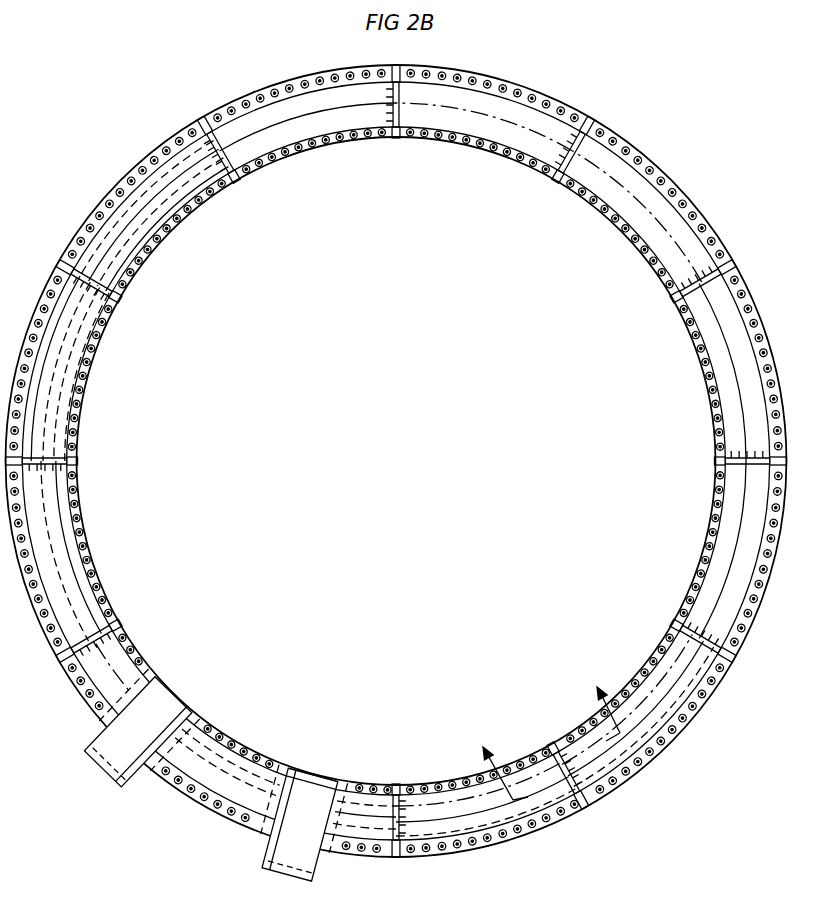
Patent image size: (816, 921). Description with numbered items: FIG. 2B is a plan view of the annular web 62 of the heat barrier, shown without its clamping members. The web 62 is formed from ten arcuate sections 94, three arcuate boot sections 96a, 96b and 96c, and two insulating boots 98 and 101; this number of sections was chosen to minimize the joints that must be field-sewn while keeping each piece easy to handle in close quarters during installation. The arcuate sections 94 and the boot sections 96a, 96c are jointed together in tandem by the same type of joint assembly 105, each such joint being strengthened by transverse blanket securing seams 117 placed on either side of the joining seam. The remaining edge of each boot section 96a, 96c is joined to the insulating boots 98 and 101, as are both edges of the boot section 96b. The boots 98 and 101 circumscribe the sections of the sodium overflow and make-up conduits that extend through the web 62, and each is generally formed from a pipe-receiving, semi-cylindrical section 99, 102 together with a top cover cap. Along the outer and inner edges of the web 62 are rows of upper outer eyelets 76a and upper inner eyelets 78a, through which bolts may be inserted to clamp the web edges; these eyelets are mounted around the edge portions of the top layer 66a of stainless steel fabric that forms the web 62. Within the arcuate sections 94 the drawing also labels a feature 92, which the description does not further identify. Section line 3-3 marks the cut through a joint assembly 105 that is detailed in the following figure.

The annular web 62 is at (156, 127).
The joint assembly 105 is at (228, 165).
The channel 92 is at (322, 108).
The arcuate section 94 is at (372, 118).
The arcuate boot section 96a is at (122, 662).
The arcuate boot section 96b is at (222, 762).
The arcuate boot section 96c is at (367, 800).
The upper inner eyelet 78a is at (447, 786).
The upper outer eyelet 76a is at (555, 834).
The top layer 66a is at (458, 835).
The transverse blanket securing seam 117 is at (580, 796).
The pipe-receiving semi-cylindrical section 102 is at (165, 703).
The insulating boot 101 is at (92, 735).
The insulating boot 98 is at (318, 876).
The pipe-receiving semi-cylindrical section 99 is at (312, 787).
The section line 3- 3 is at (548, 731).